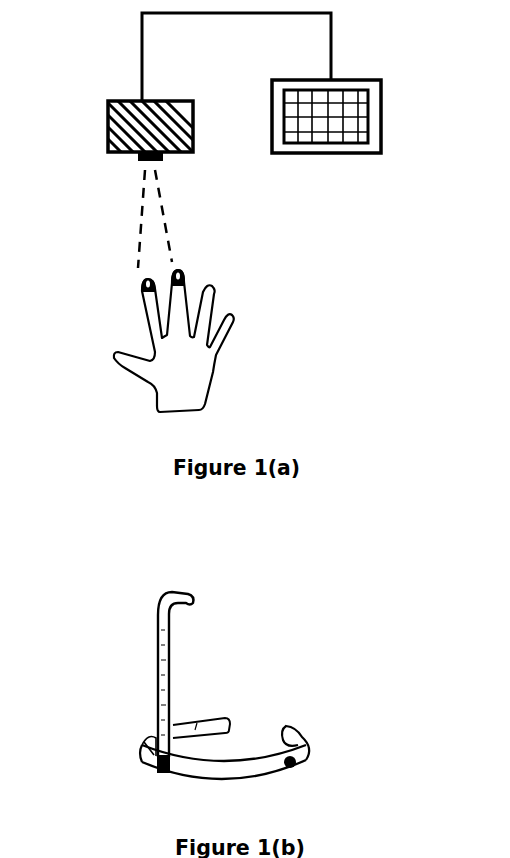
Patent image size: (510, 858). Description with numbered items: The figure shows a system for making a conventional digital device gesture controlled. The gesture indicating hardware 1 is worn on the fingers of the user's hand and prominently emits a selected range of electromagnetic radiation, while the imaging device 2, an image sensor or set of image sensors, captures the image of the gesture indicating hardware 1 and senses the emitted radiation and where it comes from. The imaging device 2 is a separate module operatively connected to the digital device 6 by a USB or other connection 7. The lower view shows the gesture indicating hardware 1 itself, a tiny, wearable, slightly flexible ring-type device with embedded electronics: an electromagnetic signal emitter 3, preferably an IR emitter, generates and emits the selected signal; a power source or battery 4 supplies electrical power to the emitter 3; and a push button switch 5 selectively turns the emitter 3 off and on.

In FIG. 1A, the gesture indicating hardware 1 is at (135, 287).
In FIG. 1B, the gesture indicating hardware 1 is at (228, 669).
In FIG. 1A, the imaging device 2 is at (117, 99).
In FIG. 1B, the electromagnetic signal emitter 3 is at (190, 590).
In FIG. 1B, the power source or battery 4 is at (148, 740).
In FIG. 1B, the push button switch 5 is at (305, 762).
In FIG. 1A, the digital device 6 is at (386, 105).
In FIG. 1A, the USB or other connection 7 is at (352, 29).